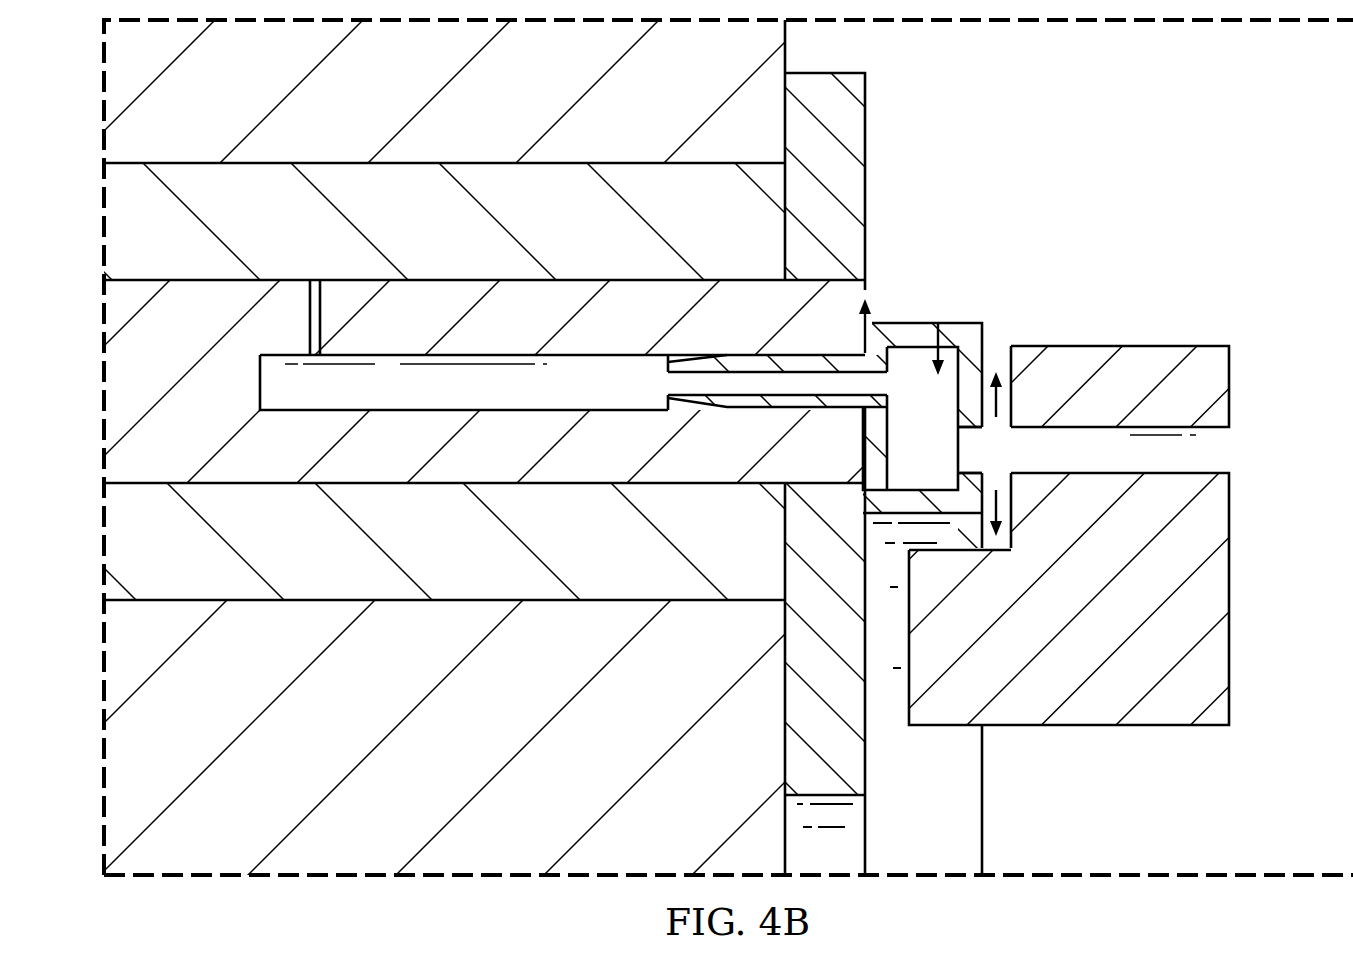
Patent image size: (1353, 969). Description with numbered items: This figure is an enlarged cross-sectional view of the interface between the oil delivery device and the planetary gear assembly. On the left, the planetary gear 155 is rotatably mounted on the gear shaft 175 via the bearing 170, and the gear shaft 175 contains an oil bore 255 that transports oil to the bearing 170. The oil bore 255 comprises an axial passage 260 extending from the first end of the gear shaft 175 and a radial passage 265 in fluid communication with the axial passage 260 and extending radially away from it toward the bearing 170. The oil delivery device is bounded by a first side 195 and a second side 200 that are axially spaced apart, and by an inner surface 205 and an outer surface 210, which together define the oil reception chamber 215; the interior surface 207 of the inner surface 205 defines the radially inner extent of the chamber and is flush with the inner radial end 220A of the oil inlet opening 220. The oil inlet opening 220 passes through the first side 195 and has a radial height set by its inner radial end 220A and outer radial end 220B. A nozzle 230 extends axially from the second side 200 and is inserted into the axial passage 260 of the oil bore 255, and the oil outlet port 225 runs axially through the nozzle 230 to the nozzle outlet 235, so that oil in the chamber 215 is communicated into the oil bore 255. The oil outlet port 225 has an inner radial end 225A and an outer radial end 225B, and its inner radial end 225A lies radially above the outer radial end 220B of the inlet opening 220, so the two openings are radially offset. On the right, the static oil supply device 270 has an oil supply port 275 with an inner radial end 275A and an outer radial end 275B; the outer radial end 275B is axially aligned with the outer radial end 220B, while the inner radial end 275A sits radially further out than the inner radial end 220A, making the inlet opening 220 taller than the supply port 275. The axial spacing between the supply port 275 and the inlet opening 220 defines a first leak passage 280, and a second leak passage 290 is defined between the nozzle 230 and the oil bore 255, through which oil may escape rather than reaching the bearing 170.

The planetary gear 155 is at (112, 85).
The bearing 170 is at (112, 225).
The gear shaft 175 is at (112, 363).
The first side 195 is at (992, 329).
The second side 200 is at (865, 413).
The inner surface 205 is at (958, 500).
The interior surface 207 is at (890, 460).
The outer surface 210 is at (975, 310).
The oil reception chamber 215 is at (938, 323).
The oil inlet opening 220 is at (981, 457).
The inner radial end 220A is at (1011, 487).
The outer radial end 220B is at (1011, 432).
The oil outlet port 225 is at (655, 377).
The inner radial end 225A is at (718, 392).
The outer radial end 225B is at (890, 385).
The nozzle 230 is at (742, 404).
The nozzle outlet 235 is at (668, 390).
The oil bore 255 is at (246, 387).
The axial passage 260 is at (390, 365).
The radial passage 265 is at (310, 323).
The oil supply device 270 is at (1229, 648).
The oil supply port 275 is at (1233, 450).
The inner radial end 275A is at (1230, 466).
The outer radial end 275B is at (1230, 437).
The first leak passage 280 is at (1011, 400).
The second leak passage 290 is at (860, 337).